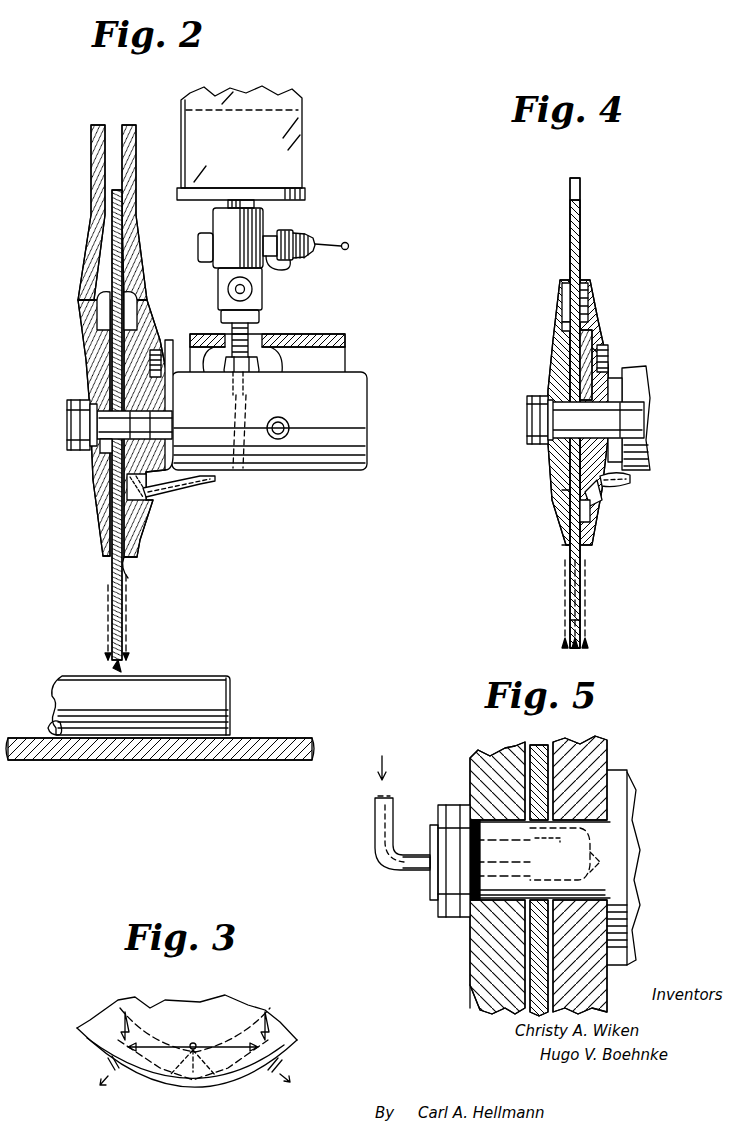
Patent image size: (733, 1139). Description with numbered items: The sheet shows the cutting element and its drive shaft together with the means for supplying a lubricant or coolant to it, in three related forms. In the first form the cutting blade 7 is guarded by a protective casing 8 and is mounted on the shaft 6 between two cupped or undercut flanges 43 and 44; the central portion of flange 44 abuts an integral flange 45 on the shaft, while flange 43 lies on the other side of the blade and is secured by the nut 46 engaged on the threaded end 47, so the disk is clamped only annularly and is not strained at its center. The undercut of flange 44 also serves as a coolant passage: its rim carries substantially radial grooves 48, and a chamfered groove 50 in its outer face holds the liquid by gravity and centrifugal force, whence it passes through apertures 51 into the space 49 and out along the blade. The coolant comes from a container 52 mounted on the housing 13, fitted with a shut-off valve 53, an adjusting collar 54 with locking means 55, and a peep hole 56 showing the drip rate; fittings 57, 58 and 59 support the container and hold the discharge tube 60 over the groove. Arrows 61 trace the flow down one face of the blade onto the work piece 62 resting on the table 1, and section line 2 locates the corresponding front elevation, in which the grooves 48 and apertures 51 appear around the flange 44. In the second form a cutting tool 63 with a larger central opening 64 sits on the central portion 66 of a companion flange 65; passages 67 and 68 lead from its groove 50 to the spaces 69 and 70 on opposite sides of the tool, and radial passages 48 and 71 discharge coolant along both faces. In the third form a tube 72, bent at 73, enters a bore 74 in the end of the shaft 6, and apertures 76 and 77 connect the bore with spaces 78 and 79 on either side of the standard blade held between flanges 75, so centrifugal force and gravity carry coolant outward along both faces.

In FIG. 2, the table 1 is at (270, 740).
In FIG. 3, the section line 2- 2 is at (312, 1108).
In FIG. 2, the shaft 6 is at (96, 462).
In FIG. 2, the cutting blade 7 is at (112, 598).
In FIG. 5, the cutting blade 7 is at (545, 748).
In FIG. 2, the protective casing 8 is at (136, 250).
In FIG. 2, the housing 13 is at (352, 474).
In FIG. 4, the housing 13 is at (648, 405).
In FIG. 2, the cupped flange 43 is at (98, 516).
In FIG. 4, the cupped flange 43 is at (558, 336).
In FIG. 2, the cupped flange 44 is at (140, 530).
In FIG. 3, the cupped flange 44 is at (174, 1012).
In FIG. 2, the integral flange 45 is at (150, 430).
In FIG. 4, the integral flange 45 is at (612, 421).
In FIG. 2, the nut 46 is at (78, 448).
In FIG. 4, the nut 46 is at (544, 447).
In FIG. 2, the threaded end 47 is at (70, 410).
In FIG. 4, the threaded end 47 is at (528, 420).
In FIG. 5, the threaded end 47 is at (436, 900).
In FIG. 2, the radial grooves 48 is at (132, 565).
In FIG. 4, the radial grooves 48 is at (567, 283).
In FIG. 3, the radial grooves 48 is at (280, 1068).
In FIG. 2, the space 49 is at (118, 318).
In FIG. 2, the chamfered groove 50 is at (152, 355).
In FIG. 4, the chamfered groove 50 is at (609, 368).
In FIG. 2, the apertures 51 is at (152, 514).
In FIG. 3, the apertures 51 is at (195, 1042).
In FIG. 2, the container 52 is at (262, 152).
In FIG. 2, the shut-off valve 53 is at (320, 243).
In FIG. 2, the adjusting collar 54 is at (286, 234).
In FIG. 2, the locking means 55 is at (282, 264).
In FIG. 2, the peep hole 56 is at (256, 290).
In FIG. 2, the fitting 57 is at (262, 333).
In FIG. 2, the fitting 58 is at (252, 366).
In FIG. 2, the fitting 59 is at (250, 388).
In FIG. 2, the discharge tube 60 is at (186, 482).
In FIG. 4, the discharge tube 60 is at (628, 486).
In FIG. 2, the arrows 61 is at (132, 640).
In FIG. 2, the work piece 62 is at (186, 682).
In FIG. 4, the cutting tool 63 is at (578, 235).
In FIG. 4, the central opening 64 is at (565, 326).
In FIG. 4, the flange 65 is at (606, 343).
In FIG. 4, the central portion 66 is at (566, 498).
In FIG. 4, the passage 67 is at (590, 340).
In FIG. 4, the passage 68 is at (597, 510).
In FIG. 4, the space 69 is at (572, 362).
In FIG. 4, the space 70 is at (594, 528).
In FIG. 4, the passages 71 is at (584, 283).
In FIG. 5, the tube 72 is at (378, 826).
In FIG. 5, the bend 73 is at (403, 876).
In FIG. 5, the bore 74 is at (495, 902).
In FIG. 5, the flanges 75 is at (572, 980).
In FIG. 5, the aperture 76 is at (565, 853).
In FIG. 5, the aperture 77 is at (591, 868).
In FIG. 5, the space 78 is at (505, 762).
In FIG. 5, the space 79 is at (565, 770).